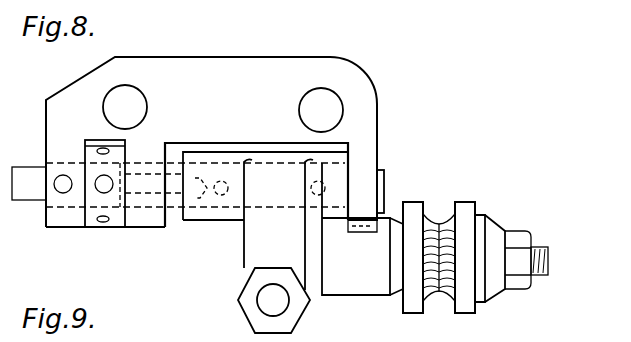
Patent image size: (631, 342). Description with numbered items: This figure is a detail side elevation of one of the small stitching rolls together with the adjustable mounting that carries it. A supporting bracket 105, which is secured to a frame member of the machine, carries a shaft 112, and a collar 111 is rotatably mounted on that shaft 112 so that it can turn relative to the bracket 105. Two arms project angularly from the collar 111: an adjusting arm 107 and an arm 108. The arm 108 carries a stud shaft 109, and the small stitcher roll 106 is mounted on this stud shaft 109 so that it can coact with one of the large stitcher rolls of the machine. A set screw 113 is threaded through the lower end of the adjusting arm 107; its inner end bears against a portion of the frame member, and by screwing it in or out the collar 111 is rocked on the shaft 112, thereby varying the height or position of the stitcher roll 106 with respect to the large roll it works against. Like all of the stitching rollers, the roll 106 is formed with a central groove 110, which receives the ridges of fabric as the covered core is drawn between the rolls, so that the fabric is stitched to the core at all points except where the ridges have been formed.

The supporting bracket 105 is at (194, 134).
The small stitcher roll 106 is at (499, 278).
The adjusting arm 107 is at (258, 246).
The arm 108 is at (357, 284).
The stud shaft 109 is at (548, 252).
The central groove 110 is at (440, 220).
The collar 111 is at (199, 220).
The shaft 112 is at (384, 190).
The set screw 113 is at (255, 313).